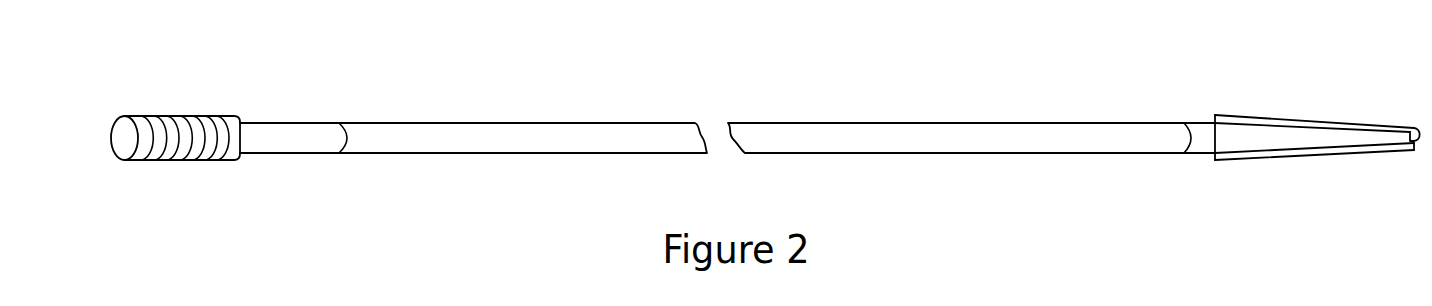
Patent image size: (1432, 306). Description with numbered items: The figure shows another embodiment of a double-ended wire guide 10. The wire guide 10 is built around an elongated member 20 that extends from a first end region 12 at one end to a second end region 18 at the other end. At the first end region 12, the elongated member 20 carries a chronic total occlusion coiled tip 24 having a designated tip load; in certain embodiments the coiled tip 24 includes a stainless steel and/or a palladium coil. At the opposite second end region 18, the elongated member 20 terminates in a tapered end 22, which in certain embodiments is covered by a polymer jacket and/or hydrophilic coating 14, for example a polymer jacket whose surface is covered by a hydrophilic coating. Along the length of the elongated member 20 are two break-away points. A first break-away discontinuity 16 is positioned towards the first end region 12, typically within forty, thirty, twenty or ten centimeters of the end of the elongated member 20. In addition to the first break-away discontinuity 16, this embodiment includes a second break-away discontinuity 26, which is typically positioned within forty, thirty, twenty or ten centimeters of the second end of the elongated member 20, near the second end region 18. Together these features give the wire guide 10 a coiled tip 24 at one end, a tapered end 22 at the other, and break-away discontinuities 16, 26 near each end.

The wire guide 10 is at (767, 92).
The first end region 12 is at (175, 132).
The polymer jacket and/or hydrophilic coating 14 is at (1320, 129).
The first break-away discontinuity 16 is at (348, 157).
The second end region 18 is at (1206, 161).
The elongated member 20 is at (645, 122).
The tapered end 22 is at (1407, 144).
The coiled tip 24 is at (176, 163).
The second break-away discontinuity 26 is at (1181, 162).